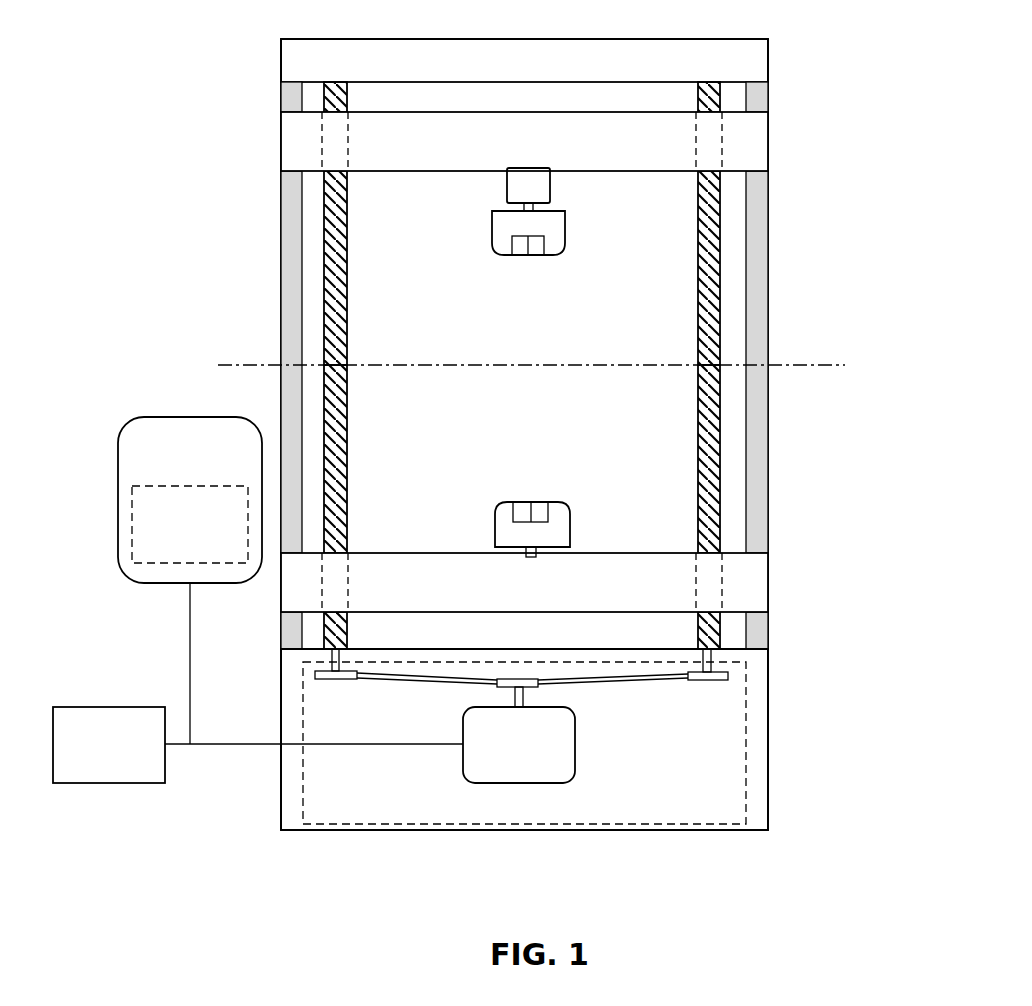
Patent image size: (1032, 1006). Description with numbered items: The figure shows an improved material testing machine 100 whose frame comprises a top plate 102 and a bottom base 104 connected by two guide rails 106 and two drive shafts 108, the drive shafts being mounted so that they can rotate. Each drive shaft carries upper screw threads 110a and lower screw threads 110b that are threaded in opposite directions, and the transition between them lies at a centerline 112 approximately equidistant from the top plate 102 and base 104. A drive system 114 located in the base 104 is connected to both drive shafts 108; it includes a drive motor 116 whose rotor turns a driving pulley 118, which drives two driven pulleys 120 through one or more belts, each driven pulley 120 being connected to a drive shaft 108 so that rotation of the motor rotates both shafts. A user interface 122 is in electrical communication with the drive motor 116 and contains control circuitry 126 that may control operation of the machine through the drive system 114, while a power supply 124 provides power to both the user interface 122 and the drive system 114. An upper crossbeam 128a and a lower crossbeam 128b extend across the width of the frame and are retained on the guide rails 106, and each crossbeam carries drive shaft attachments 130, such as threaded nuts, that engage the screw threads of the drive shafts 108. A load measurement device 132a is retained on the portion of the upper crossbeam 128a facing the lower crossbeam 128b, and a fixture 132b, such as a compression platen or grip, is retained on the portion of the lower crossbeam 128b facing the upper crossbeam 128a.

The material testing machine 100 is at (150, 122).
The top plate 102 is at (272, 55).
The bottom base 104 is at (793, 780).
The guide rails 106 is at (278, 340).
The drive shafts 108 is at (323, 224).
The upper screw threads 110a is at (348, 311).
The lower screw threads 110b is at (348, 438).
The centerline 112 is at (852, 365).
The drive system 114 is at (524, 743).
The drive motor 116 is at (519, 745).
The driving pulley 118 is at (550, 687).
The driven pulleys 120 is at (330, 683).
The user interface 122 is at (190, 580).
The power supply 124 is at (258, 745).
The control circuitry 126 is at (190, 524).
The upper crossbeam 128a is at (782, 149).
The lower crossbeam 128b is at (790, 588).
The drive shaft attachments 130 is at (351, 141).
The load measurement device 132a is at (503, 185).
The fixture 132b is at (534, 497).